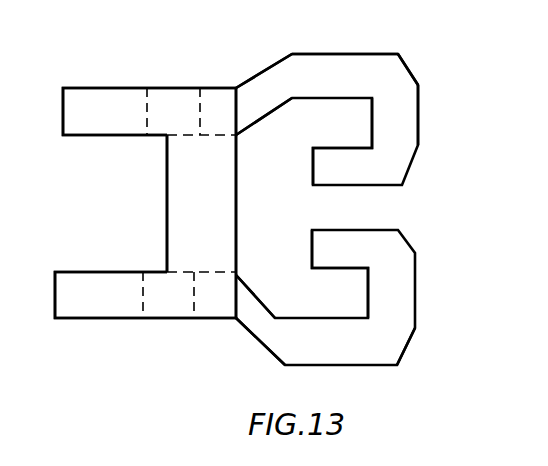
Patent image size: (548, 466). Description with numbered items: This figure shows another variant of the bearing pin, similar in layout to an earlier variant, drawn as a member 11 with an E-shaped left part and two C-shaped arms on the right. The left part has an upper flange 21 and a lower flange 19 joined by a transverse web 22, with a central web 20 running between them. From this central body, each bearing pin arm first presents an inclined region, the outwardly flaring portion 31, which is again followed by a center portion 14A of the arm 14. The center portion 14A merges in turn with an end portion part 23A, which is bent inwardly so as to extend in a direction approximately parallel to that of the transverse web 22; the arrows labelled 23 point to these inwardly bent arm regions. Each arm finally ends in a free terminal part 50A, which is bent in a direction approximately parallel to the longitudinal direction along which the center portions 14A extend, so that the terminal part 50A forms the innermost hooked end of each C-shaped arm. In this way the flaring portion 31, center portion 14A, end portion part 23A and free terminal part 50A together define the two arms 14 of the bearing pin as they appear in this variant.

The connector member 11 is at (97, 327).
The arm 14 is at (328, 53).
The center portion 14A is at (363, 77).
The lower flange 19 is at (154, 308).
The web 20 is at (248, 207).
The upper flange 21 is at (97, 117).
The transverse web 22 is at (178, 203).
The C-shaped arm 23 is at (431, 141).
The end portion part 23A is at (412, 117).
The outwardly flaring portion 31 is at (272, 82).
The free terminal part 50A is at (330, 160).